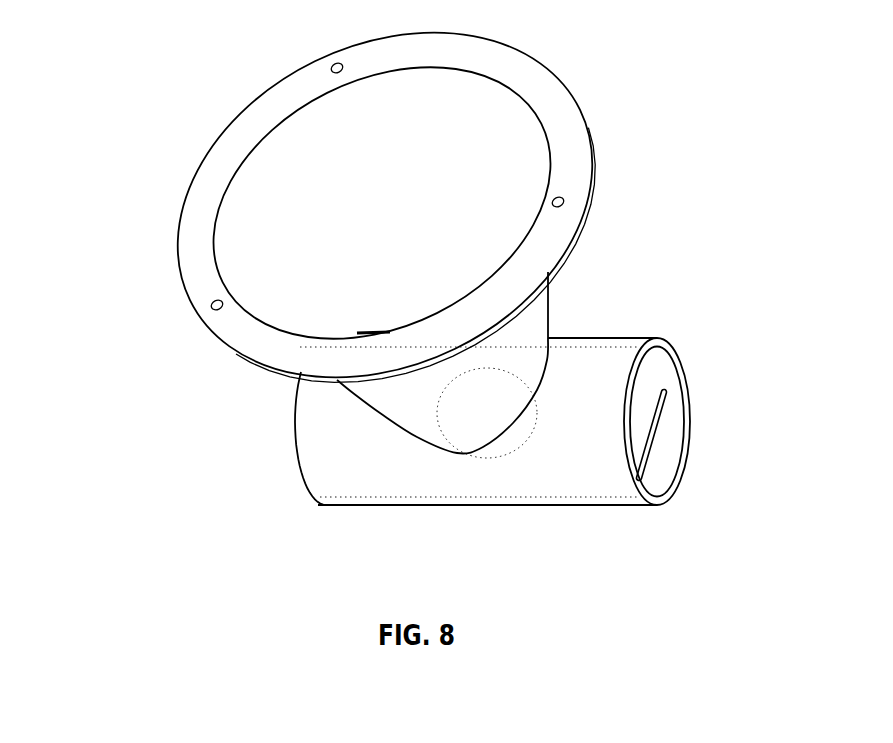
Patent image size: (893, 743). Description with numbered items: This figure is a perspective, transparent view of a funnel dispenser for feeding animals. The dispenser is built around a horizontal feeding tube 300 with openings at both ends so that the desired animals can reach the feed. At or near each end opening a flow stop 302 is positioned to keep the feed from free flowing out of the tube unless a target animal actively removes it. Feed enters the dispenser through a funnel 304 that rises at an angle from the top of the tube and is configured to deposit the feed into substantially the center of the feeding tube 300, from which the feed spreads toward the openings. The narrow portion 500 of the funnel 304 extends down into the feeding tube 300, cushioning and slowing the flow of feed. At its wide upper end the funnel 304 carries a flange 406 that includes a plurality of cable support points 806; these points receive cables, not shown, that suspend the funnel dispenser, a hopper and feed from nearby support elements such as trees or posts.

The feeding tube 300 is at (337, 473).
The flow stop 302 is at (655, 428).
The funnel 304 is at (537, 298).
The flange 406 is at (278, 103).
The narrow portion 500 is at (428, 506).
The cable support point 806 is at (215, 304).